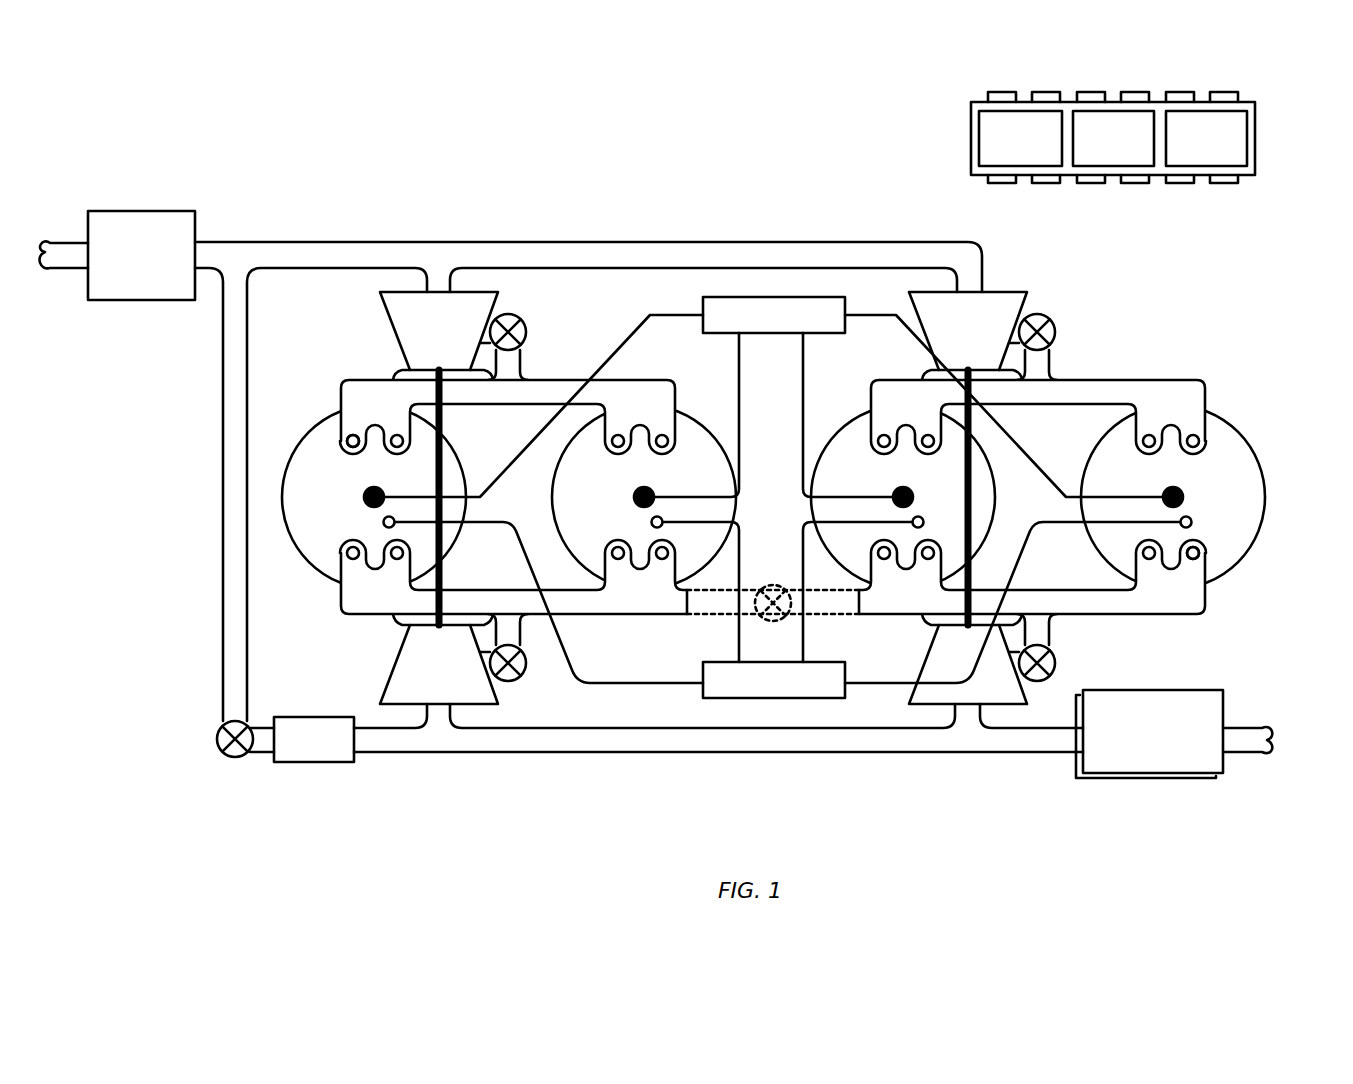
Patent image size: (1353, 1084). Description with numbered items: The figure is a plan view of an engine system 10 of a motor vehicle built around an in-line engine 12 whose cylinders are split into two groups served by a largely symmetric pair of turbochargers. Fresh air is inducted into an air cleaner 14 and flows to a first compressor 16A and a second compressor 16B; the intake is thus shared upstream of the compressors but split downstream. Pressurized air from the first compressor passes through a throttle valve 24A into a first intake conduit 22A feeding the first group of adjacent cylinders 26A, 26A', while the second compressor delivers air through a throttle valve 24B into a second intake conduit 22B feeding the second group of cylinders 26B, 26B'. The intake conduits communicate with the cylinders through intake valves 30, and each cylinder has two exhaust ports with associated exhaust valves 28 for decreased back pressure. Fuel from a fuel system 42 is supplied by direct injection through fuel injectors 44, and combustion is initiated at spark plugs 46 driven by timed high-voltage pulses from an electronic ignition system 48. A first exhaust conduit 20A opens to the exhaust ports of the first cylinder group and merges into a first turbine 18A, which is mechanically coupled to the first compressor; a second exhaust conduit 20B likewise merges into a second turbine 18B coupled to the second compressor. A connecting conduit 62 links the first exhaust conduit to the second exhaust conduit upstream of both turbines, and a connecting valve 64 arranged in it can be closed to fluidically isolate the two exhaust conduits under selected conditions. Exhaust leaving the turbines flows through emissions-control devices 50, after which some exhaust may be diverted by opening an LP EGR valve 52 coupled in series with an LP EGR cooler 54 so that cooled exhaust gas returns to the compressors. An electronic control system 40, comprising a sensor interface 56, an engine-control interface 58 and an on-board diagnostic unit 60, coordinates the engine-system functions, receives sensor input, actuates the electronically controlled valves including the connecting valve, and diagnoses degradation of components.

The engine system 10 is at (192, 851).
The engine 12 is at (1304, 473).
The air cleaner 14 is at (117, 255).
The first compressor 16A is at (439, 458).
The second compressor 16B is at (968, 458).
The first turbine 18A is at (441, 235).
The second turbine 18B is at (967, 767).
The first exhaust conduit 20A is at (343, 614).
The second exhaust conduit 20B is at (1205, 612).
The first intake conduit 22A is at (345, 382).
The second intake conduit 22B is at (1205, 382).
The throttle valve 24A is at (509, 313).
The throttle valve 24B is at (1038, 313).
The cylinder 26A is at (374, 497).
The cylinder 26A' is at (643, 497).
The cylinder 26B is at (903, 497).
The cylinder 26B' is at (1171, 497).
The exhaust valve 28 is at (1198, 548).
The intake valve 30 is at (345, 447).
The electronic control system 40 is at (971, 120).
The fuel system 42 is at (788, 597).
The fuel injector 44 is at (650, 525).
The spark plug 46 is at (903, 487).
The electronic ignition system 48 is at (773, 402).
The emissions-control device 50 is at (1174, 734).
The LP EGR valve 52 is at (216, 741).
The LP EGR cooler 54 is at (302, 739).
The sensor interface 56 is at (1020, 138).
The engine-control interface 58 is at (1113, 138).
The on-board diagnostic unit 60 is at (1206, 138).
The connecting conduit 62 is at (720, 617).
The connecting valve 64 is at (768, 588).